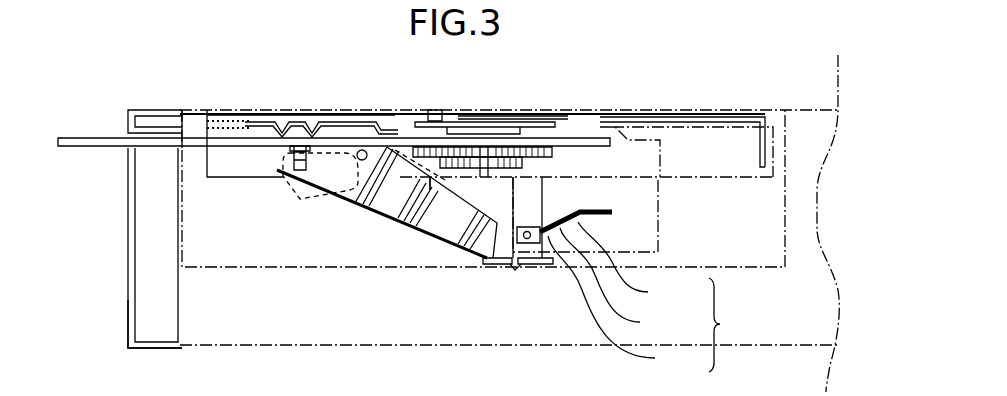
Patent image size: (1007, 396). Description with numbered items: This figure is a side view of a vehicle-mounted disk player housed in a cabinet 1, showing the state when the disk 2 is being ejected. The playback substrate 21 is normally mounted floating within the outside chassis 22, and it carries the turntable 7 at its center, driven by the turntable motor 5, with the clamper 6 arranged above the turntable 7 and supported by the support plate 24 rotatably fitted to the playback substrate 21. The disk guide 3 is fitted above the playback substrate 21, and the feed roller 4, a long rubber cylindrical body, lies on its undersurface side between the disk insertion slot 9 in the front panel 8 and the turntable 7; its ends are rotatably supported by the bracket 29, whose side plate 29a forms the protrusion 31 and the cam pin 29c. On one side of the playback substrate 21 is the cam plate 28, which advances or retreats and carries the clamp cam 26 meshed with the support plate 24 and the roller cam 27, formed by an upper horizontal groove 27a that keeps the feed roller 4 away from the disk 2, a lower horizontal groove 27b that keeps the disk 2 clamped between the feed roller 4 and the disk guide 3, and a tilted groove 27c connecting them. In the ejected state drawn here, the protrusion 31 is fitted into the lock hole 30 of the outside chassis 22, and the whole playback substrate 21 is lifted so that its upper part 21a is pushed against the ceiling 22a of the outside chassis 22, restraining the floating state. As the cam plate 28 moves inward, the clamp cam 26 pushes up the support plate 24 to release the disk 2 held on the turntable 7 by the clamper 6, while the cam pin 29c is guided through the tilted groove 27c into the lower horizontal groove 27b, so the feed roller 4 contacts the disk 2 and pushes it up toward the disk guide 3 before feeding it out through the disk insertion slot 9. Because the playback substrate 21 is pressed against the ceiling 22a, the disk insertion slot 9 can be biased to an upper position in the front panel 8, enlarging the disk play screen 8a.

The cabinet 1 is at (515, 349).
The disk 2 is at (96, 147).
The disk guide 3 is at (340, 117).
The feed roller 4 is at (301, 120).
The turntable motor 5 is at (445, 208).
The clamper 6 is at (437, 114).
The turntable 7 is at (550, 154).
The front panel 8 is at (128, 250).
The disk play screen 8a is at (128, 288).
The disk insertion slot 9 is at (128, 126).
The playback substrate 21 is at (270, 176).
The upper part of the external form of the playback substrate 21a is at (250, 112).
The outside chassis 22 is at (236, 270).
The ceiling of the outside chassis 22a is at (214, 108).
The support plate 24 is at (565, 118).
The clamp cam 26 is at (620, 123).
The roller cam 27 is at (730, 325).
The upper horizontal groove 27a is at (639, 265).
The lower horizontal groove 27b is at (626, 305).
The tilted groove 27c is at (625, 282).
The cam plate 28 is at (660, 203).
The bracket 29 is at (385, 224).
The side plate of the bracket 29a is at (366, 200).
The cam pin 29c is at (546, 223).
The lock hole 30 is at (498, 266).
The protrusion 31 is at (524, 268).